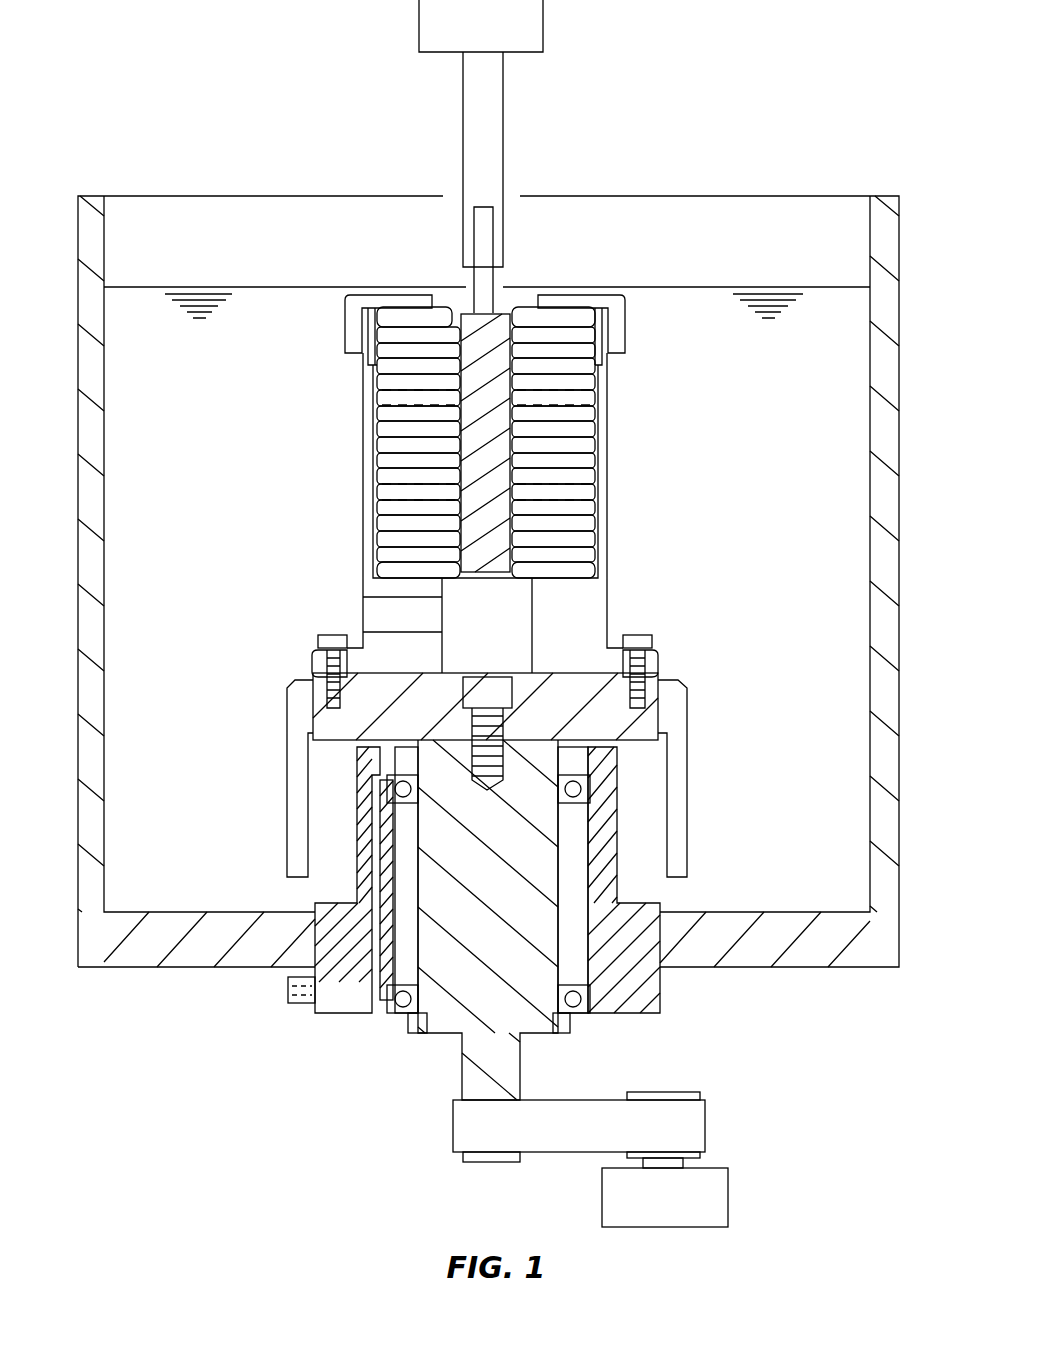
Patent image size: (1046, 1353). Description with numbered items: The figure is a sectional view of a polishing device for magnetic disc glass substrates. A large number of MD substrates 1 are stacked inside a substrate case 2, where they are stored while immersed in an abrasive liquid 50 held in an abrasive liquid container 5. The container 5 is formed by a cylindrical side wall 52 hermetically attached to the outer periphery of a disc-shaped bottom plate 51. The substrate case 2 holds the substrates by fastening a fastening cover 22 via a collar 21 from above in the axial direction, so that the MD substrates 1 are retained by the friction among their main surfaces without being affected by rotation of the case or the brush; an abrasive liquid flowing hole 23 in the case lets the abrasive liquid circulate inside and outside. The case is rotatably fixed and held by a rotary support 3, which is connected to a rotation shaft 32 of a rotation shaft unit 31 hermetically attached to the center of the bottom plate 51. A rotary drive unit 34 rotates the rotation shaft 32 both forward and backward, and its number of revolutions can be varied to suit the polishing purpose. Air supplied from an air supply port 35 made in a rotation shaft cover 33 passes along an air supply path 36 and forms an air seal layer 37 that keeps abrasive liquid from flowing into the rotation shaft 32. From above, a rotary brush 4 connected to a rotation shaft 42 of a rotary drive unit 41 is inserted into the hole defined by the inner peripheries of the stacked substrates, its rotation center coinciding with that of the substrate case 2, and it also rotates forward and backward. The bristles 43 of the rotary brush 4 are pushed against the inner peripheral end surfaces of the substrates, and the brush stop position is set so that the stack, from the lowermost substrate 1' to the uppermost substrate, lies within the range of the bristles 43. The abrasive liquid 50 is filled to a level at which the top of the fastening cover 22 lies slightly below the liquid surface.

The MD substrate 1 is at (472, 442).
The lowermost substrate 1' is at (529, 554).
The substrate case 2 is at (363, 408).
The rotary support 3 is at (378, 692).
The rotary brush 4 is at (470, 300).
The abrasive liquid container 5 is at (76, 265).
The collar 21 is at (548, 318).
The fastening cover 22 is at (375, 300).
The abrasive liquid flowing hole 23 is at (363, 615).
The rotation shaft unit 31 is at (643, 985).
The rotation shaft 32 is at (447, 1025).
The rotation shaft cover 33 is at (335, 1012).
The rotary drive unit 34 is at (728, 1195).
The air supply port 35 is at (288, 990).
The air supply path 36 is at (378, 856).
The air seal layer 37 is at (335, 772).
The rotary drive unit 41 is at (545, 5).
The rotation shaft 42 is at (503, 100).
The bristles 43 is at (495, 420).
The abrasive liquid 50 is at (130, 287).
The bottom plate 51 is at (200, 952).
The side wall 52 is at (90, 935).